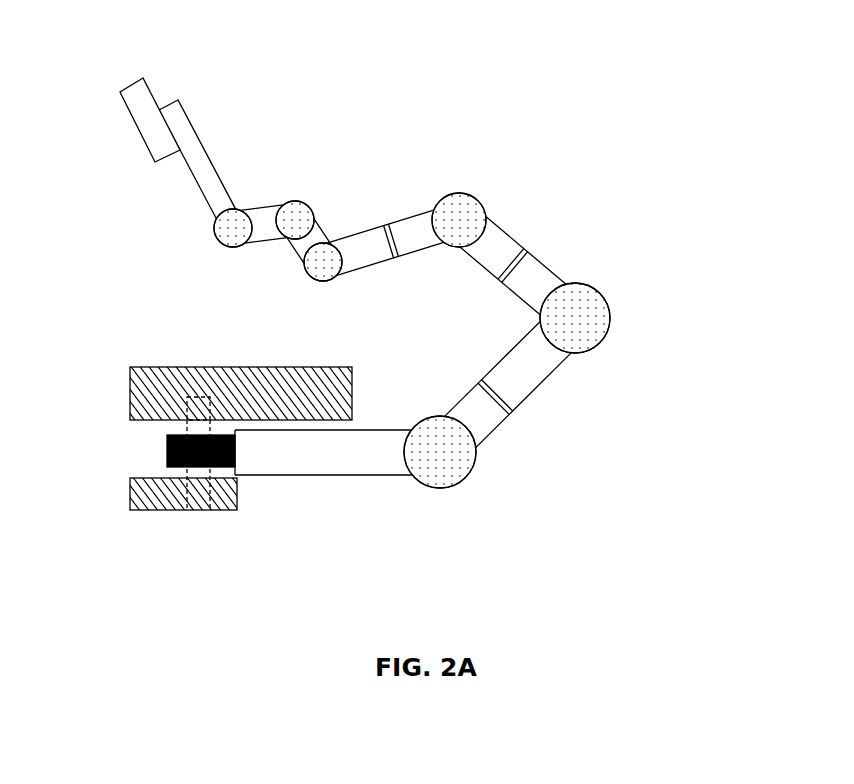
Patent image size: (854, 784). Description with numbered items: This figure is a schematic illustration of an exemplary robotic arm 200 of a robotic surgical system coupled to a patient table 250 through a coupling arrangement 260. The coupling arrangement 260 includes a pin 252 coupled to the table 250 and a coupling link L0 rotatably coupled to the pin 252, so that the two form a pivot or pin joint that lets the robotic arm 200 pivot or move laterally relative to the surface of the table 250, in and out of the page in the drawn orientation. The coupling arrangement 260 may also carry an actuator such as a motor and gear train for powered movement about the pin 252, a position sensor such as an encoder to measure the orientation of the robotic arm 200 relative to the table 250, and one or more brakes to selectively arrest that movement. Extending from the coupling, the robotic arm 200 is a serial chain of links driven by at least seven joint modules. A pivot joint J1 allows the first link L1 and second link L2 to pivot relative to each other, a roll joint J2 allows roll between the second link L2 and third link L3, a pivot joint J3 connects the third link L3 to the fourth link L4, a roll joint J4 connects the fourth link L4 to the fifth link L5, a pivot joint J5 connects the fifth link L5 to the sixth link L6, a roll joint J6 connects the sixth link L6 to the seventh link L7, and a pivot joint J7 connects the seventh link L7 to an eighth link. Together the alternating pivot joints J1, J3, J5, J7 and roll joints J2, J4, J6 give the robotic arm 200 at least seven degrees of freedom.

The robotic arm 200 is at (407, 299).
The table 250 is at (157, 352).
The pin 252 is at (186, 410).
The coupling link L0 is at (168, 450).
The coupling arrangement 260 is at (107, 472).
The first link L1 is at (308, 467).
The second link L2 is at (492, 428).
The third link L3 is at (543, 373).
The fourth link L4 is at (548, 268).
The fifth link L5 is at (500, 240).
The sixth link L6 is at (408, 223).
The seventh link L7 is at (347, 252).
The pivot joint J1 is at (426, 499).
The roll joint J2 is at (476, 381).
The pivot joint J3 is at (618, 333).
The roll joint J4 is at (500, 286).
The pivot joint J5 is at (483, 190).
The roll joint J6 is at (397, 255).
The pivot joint J7 is at (308, 287).